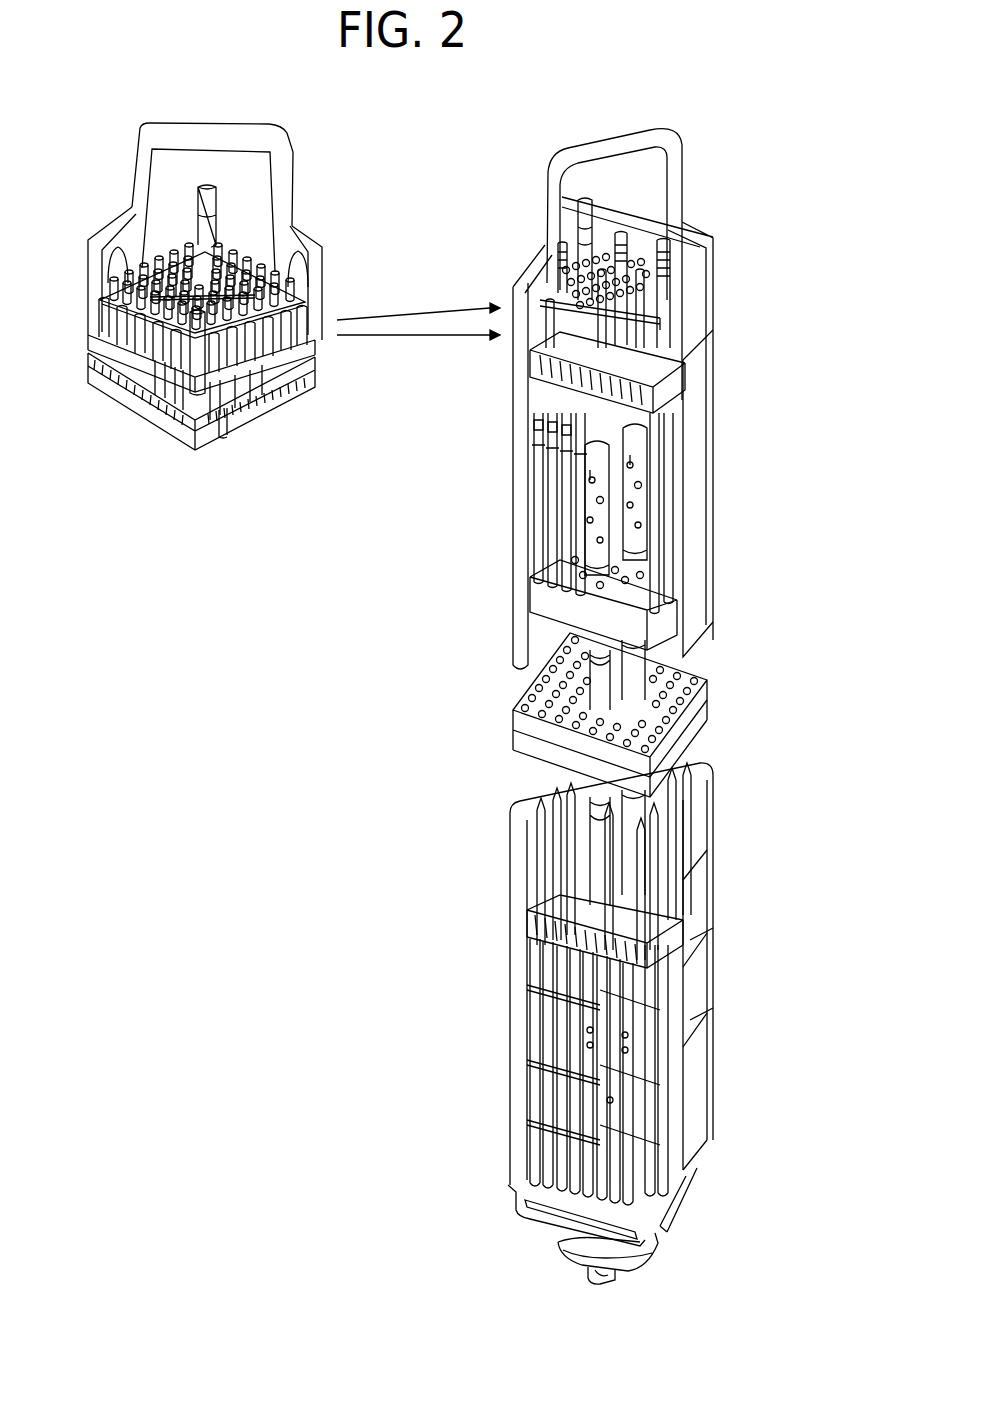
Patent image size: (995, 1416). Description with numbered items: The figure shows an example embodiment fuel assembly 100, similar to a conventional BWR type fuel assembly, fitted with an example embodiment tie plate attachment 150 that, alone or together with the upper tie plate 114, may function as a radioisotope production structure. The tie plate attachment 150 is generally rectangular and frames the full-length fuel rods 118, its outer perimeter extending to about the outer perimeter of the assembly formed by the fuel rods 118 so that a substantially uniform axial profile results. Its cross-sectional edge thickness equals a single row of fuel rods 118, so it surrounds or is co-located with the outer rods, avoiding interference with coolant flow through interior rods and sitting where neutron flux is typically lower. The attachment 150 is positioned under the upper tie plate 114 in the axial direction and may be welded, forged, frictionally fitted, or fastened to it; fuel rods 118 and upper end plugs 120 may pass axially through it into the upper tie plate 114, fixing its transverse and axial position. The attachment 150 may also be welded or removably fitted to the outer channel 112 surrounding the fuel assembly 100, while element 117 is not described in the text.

The fuel assembly 100 is at (748, 571).
The outer channel 112 is at (695, 610).
The upper tie plate 114 is at (140, 142).
The tie rods 117 is at (665, 431).
The fuel rods 118 is at (657, 523).
The upper end plugs 120 is at (673, 253).
The tie plate attachment 150 is at (267, 402).